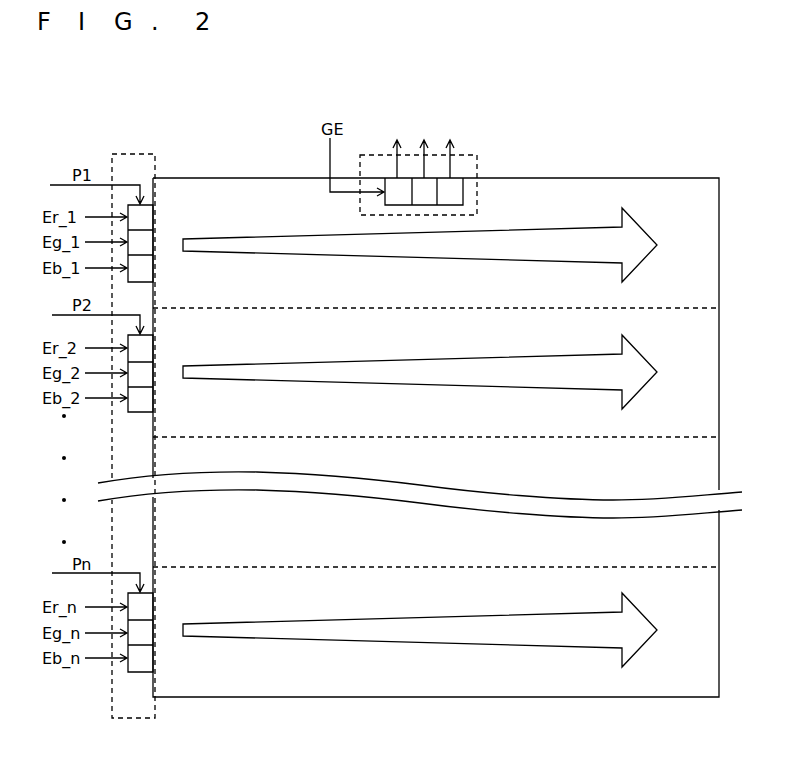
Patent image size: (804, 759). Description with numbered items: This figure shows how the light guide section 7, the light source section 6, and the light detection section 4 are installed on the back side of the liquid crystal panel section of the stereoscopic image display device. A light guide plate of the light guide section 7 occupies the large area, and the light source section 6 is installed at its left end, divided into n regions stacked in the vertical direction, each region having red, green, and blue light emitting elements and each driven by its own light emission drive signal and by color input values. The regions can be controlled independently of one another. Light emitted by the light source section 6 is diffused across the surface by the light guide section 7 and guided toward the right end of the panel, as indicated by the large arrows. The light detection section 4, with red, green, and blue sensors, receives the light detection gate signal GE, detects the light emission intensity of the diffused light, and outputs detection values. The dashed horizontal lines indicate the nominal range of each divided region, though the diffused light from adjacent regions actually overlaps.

The light detection section 4 is at (468, 155).
The light source section 6 is at (134, 154).
The light guide section 7 is at (634, 178).